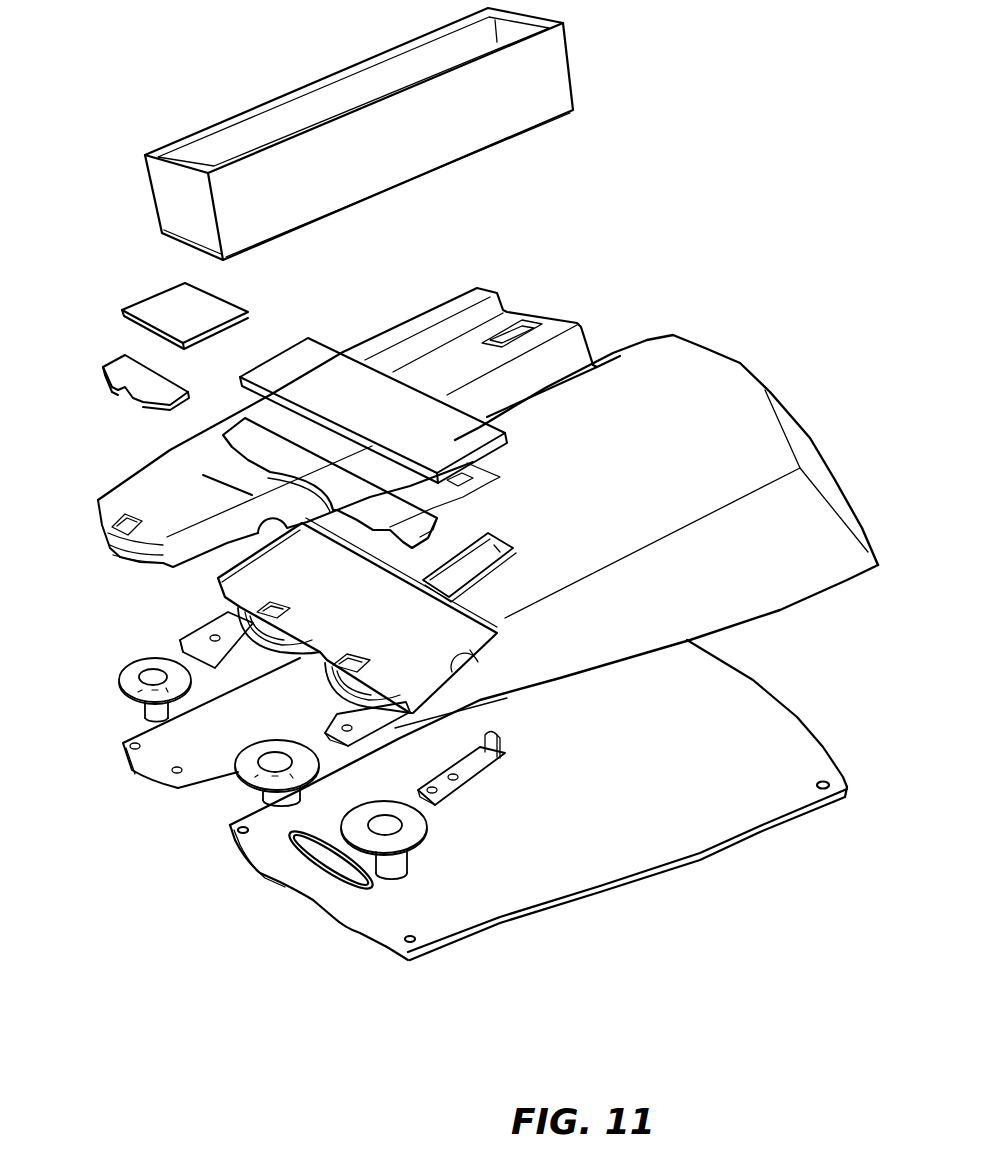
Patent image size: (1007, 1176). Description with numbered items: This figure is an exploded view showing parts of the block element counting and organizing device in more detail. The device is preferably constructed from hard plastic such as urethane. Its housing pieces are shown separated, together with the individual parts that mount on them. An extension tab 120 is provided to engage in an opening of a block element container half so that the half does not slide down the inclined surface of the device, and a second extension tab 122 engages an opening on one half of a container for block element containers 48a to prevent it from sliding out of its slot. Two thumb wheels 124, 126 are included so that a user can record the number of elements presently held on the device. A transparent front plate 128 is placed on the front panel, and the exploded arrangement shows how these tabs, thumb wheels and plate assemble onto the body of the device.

The housing shell 48a is at (548, 142).
The extension tab 120 is at (484, 790).
The extension tab 122 is at (334, 766).
The thumb wheel 124 is at (420, 880).
The thumb wheel 126 is at (228, 792).
The transparent front plate 128 is at (243, 464).